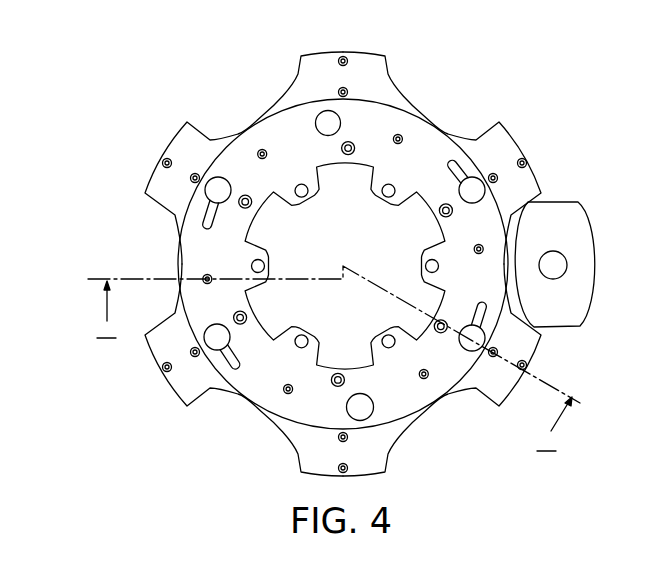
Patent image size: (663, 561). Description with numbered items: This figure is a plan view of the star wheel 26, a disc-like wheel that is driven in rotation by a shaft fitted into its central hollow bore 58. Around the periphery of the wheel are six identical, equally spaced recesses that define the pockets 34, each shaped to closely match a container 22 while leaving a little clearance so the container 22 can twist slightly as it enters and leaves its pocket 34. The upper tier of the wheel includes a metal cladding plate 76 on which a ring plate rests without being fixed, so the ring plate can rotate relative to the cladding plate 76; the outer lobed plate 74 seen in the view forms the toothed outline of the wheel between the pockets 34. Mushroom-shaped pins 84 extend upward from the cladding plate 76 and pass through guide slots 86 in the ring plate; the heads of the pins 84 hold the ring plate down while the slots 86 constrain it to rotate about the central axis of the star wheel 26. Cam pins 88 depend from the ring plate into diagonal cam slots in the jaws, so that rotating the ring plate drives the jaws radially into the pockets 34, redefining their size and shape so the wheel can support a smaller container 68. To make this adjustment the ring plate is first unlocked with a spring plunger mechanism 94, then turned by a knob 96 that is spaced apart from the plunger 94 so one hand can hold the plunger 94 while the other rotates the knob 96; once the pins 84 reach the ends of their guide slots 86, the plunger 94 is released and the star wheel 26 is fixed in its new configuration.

The container 22 is at (564, 236).
The star wheel 26 is at (341, 252).
The pocket 34 is at (249, 420).
The hollow bore 58 is at (345, 266).
The smaller container 68 is at (261, 250).
The lobed outer plate 74 is at (343, 252).
The cladding plate 76 is at (319, 264).
The mushroom-shaped pin 84 is at (222, 180).
The guide slot 86 is at (206, 225).
The cam pin 88 is at (286, 384).
The spring plunger mechanism 94 is at (365, 396).
The knob 96 is at (322, 134).